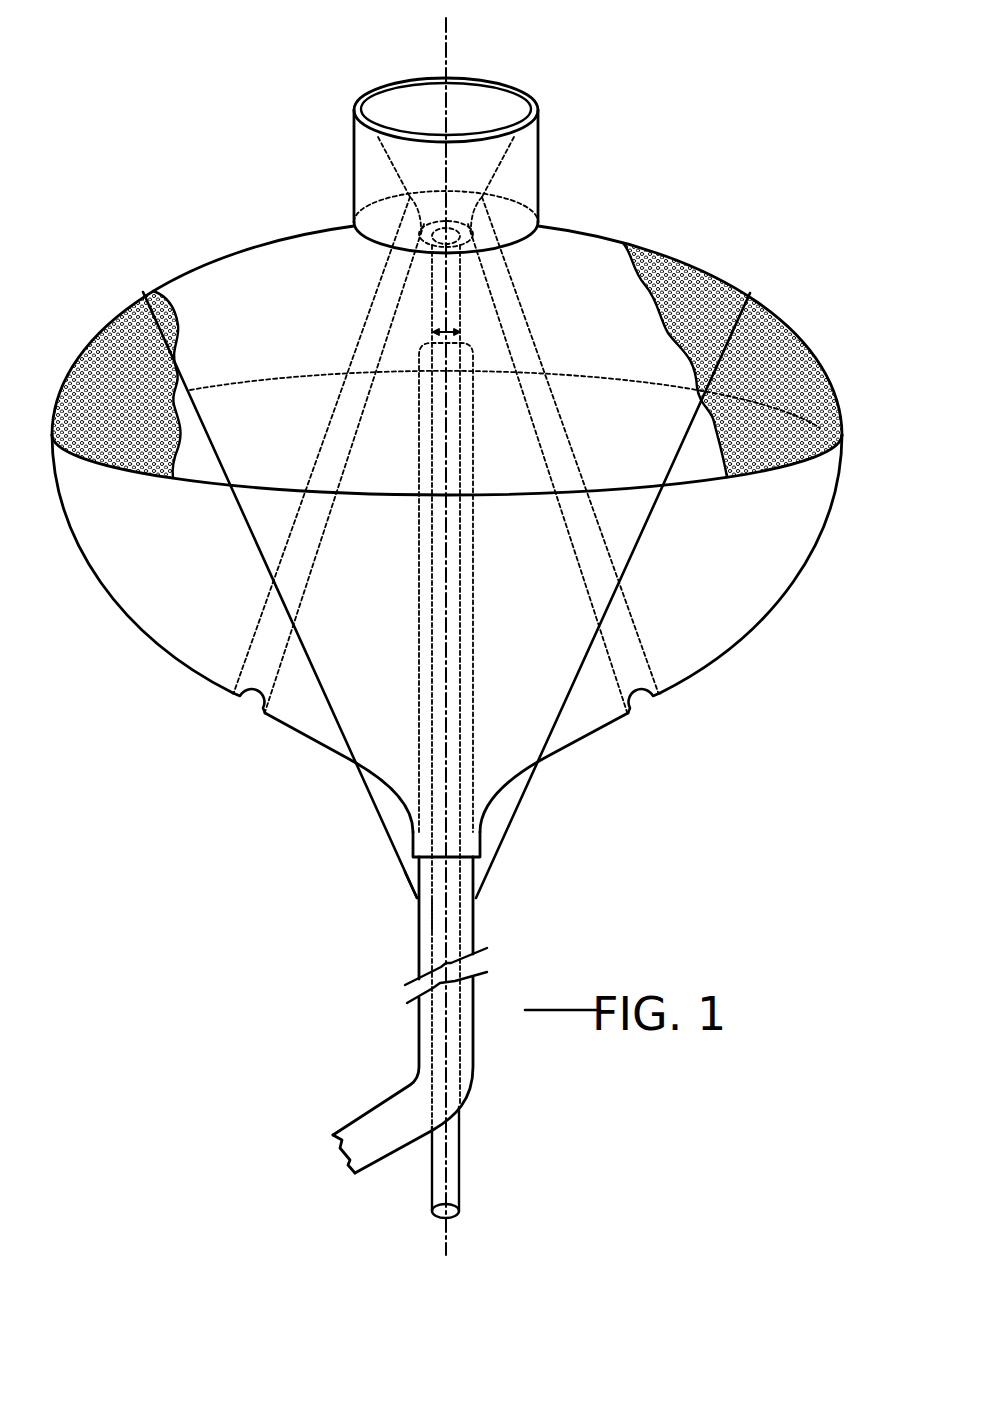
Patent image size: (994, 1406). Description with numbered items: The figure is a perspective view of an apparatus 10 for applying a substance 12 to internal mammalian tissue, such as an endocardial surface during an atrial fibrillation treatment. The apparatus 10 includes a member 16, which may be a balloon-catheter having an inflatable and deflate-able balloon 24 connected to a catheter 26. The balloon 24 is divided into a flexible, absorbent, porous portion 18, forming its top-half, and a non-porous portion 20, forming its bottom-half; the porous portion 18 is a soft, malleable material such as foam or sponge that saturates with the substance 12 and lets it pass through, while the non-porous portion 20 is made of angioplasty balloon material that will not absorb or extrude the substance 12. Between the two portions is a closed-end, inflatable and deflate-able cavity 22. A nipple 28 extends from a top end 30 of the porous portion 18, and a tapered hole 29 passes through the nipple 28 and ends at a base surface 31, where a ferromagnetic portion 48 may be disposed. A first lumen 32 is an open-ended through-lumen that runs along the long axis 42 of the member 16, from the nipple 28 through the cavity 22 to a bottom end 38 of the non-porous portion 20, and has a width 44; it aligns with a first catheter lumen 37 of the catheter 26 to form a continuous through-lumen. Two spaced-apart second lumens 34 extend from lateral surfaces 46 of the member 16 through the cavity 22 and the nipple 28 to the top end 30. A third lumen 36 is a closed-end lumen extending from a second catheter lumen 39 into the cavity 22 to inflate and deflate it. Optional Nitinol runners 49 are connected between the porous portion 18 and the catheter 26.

The apparatus 10 is at (609, 110).
The substance 12 is at (540, 293).
The member 16 is at (273, 283).
The flexible, absorbent, porous portion 18 is at (782, 308).
The non-porous portion 20 is at (803, 569).
The cavity 22 is at (297, 410).
The balloon 24 is at (117, 590).
The catheter 26 is at (418, 937).
The nipple 28 is at (533, 110).
The tapered hole 29 is at (388, 153).
The top end 30 is at (333, 223).
The base surface 31 is at (467, 230).
The first lumen 32 is at (452, 300).
The second lumen 34 is at (338, 445).
The third lumen 36 is at (466, 604).
The first catheter lumen 37 is at (437, 917).
The bottom end 38 is at (480, 860).
The second catheter lumen 39 is at (427, 895).
The long axis 42 is at (445, 62).
The width 44 is at (448, 335).
The lateral surfaces 46 is at (213, 683).
The ferromagnetic portion 48 is at (515, 230).
The Nitinol runners 49 is at (242, 523).